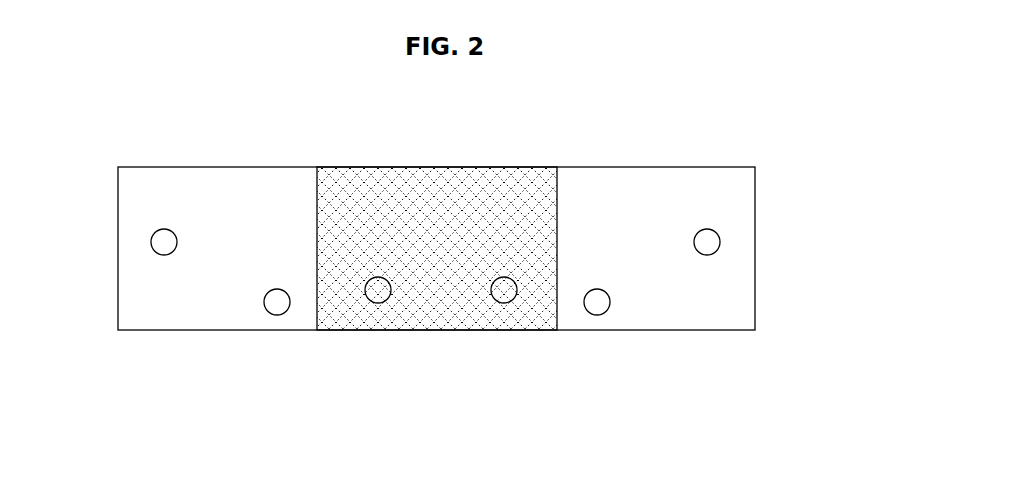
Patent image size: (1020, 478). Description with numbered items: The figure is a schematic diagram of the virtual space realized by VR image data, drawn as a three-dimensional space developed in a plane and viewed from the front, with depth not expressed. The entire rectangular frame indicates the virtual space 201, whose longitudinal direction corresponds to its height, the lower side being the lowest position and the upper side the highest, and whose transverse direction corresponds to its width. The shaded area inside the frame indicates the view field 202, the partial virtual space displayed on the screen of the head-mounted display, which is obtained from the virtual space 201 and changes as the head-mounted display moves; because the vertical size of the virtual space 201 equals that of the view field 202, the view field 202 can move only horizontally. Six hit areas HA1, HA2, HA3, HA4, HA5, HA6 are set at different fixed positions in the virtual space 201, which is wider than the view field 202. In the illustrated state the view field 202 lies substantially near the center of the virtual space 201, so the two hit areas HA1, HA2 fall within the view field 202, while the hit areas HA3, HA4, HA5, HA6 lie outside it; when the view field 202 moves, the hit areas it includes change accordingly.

The virtual space 201 is at (536, 149).
The view field 202 is at (444, 188).
The hit area HA1 is at (378, 303).
The hit area HA2 is at (505, 303).
The hit area HA3 is at (598, 315).
The hit area HA4 is at (720, 240).
The hit area HA5 is at (278, 315).
The hit area HA6 is at (151, 237).